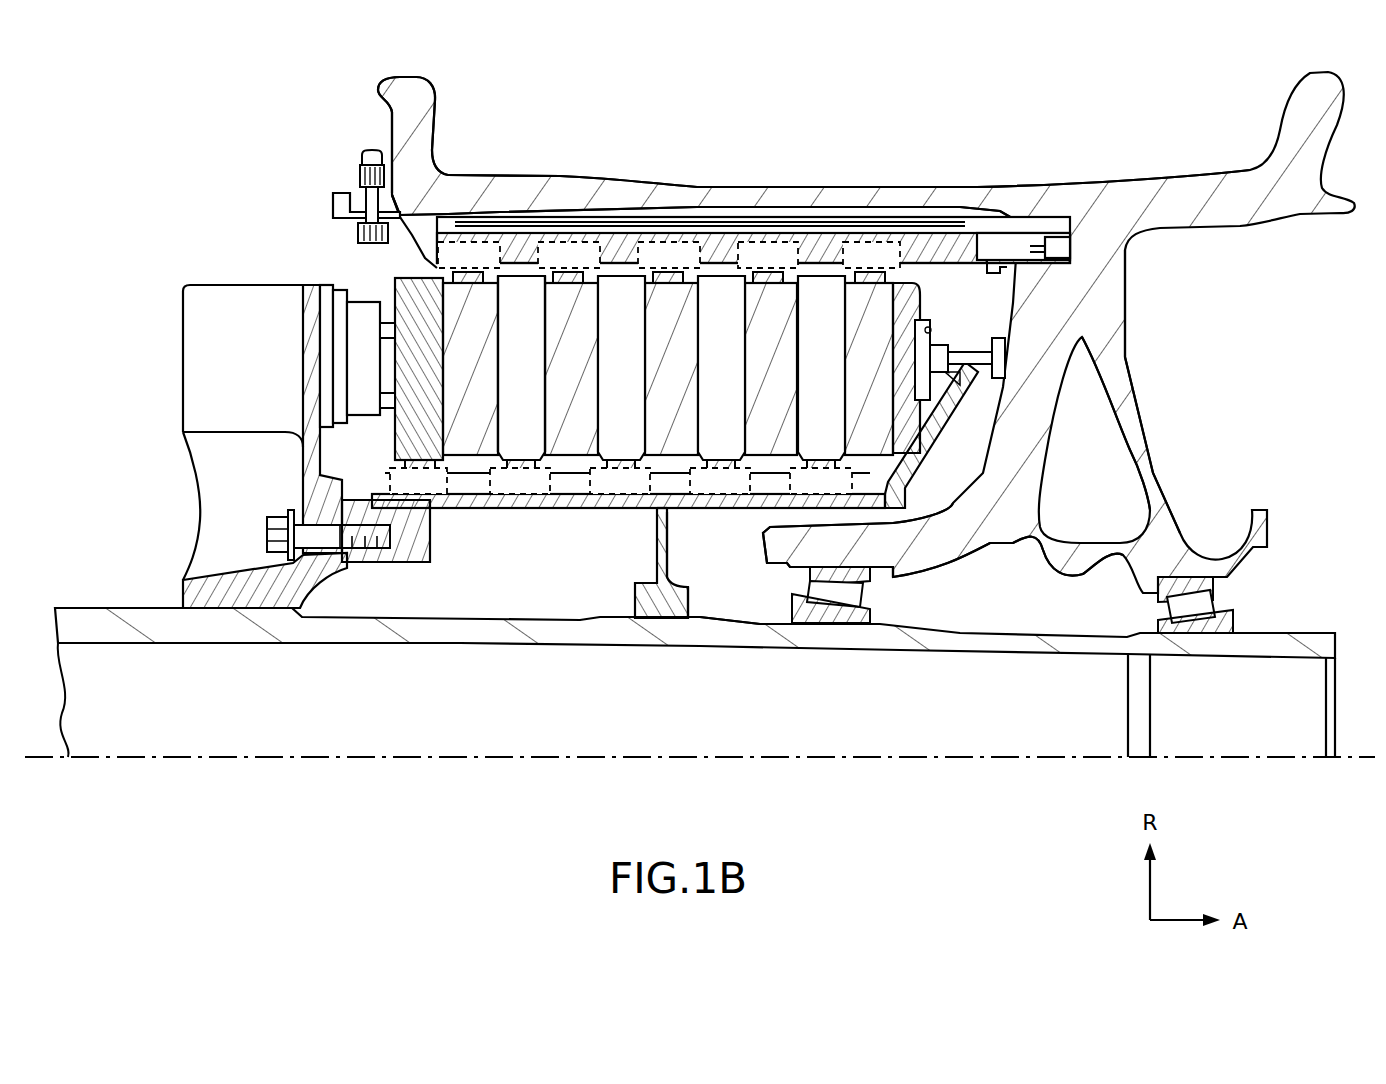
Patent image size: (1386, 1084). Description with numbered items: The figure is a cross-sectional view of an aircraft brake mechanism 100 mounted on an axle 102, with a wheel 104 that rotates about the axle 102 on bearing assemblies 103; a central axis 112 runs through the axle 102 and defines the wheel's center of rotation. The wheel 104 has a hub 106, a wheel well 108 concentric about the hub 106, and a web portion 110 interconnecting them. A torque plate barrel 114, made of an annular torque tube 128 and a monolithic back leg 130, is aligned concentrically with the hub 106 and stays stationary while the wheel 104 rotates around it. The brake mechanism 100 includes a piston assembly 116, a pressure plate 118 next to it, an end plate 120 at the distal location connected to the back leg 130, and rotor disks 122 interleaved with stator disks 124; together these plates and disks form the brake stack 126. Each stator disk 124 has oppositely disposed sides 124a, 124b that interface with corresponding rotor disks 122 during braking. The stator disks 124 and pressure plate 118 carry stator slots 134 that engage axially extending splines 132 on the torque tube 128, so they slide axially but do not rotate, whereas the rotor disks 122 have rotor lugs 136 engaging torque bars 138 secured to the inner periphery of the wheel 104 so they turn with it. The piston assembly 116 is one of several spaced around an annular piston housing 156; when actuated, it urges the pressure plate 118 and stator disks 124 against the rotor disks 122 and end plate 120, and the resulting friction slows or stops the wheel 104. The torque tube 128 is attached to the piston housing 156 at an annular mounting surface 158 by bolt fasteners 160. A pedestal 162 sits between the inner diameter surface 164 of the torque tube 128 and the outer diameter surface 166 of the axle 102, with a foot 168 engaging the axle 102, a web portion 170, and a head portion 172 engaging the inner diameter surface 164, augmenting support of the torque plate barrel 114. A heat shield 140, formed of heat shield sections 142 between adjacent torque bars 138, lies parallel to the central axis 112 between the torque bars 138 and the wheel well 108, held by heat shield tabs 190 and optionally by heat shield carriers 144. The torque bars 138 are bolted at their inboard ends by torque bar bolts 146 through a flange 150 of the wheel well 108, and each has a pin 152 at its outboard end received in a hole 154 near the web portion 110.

The brake mechanism 100 is at (178, 146).
The axle 102 is at (992, 647).
The bearing assemblies 103 is at (1203, 602).
The wheel 104 is at (1158, 340).
The hub 106 is at (960, 553).
The wheel well 108 is at (1013, 187).
The web portion 110 is at (1153, 420).
The central axis 112 is at (943, 760).
The torque plate barrel 114 is at (496, 527).
The piston assembly 116 is at (266, 256).
The pressure plate 118 is at (393, 288).
The end plate 120 is at (920, 297).
The rotor disks 122 is at (473, 293).
The stator disks 124 is at (620, 287).
The side of stator disk 124a is at (493, 320).
The side of stator disk 124b is at (543, 355).
The brake stack 126 is at (782, 267).
The torque tube 128 is at (451, 510).
The back leg 130 is at (933, 427).
The splines 132 is at (378, 490).
The stator slots 134 is at (792, 487).
The rotor lugs 136 is at (545, 253).
The torque bars 138 is at (928, 253).
The heat shield 140 is at (667, 217).
The heat shield sections 142 is at (780, 290).
The heat shield carriers 144 is at (437, 267).
The torque bar bolts 146 is at (370, 148).
The flange 150 is at (340, 193).
The pin 152 is at (1020, 247).
The hole 154 is at (1058, 237).
The annular piston housing 156 is at (183, 292).
The annular mounting surface 158 is at (385, 568).
The bolt fasteners 160 is at (267, 531).
The pedestal 162 is at (638, 544).
The inner diameter surface 164 is at (538, 510).
The outer diameter surface 166 is at (700, 617).
The foot 168 is at (690, 580).
The web portion 170 is at (648, 568).
The head portion 172 is at (653, 510).
The heat shield tabs 190 is at (1002, 267).